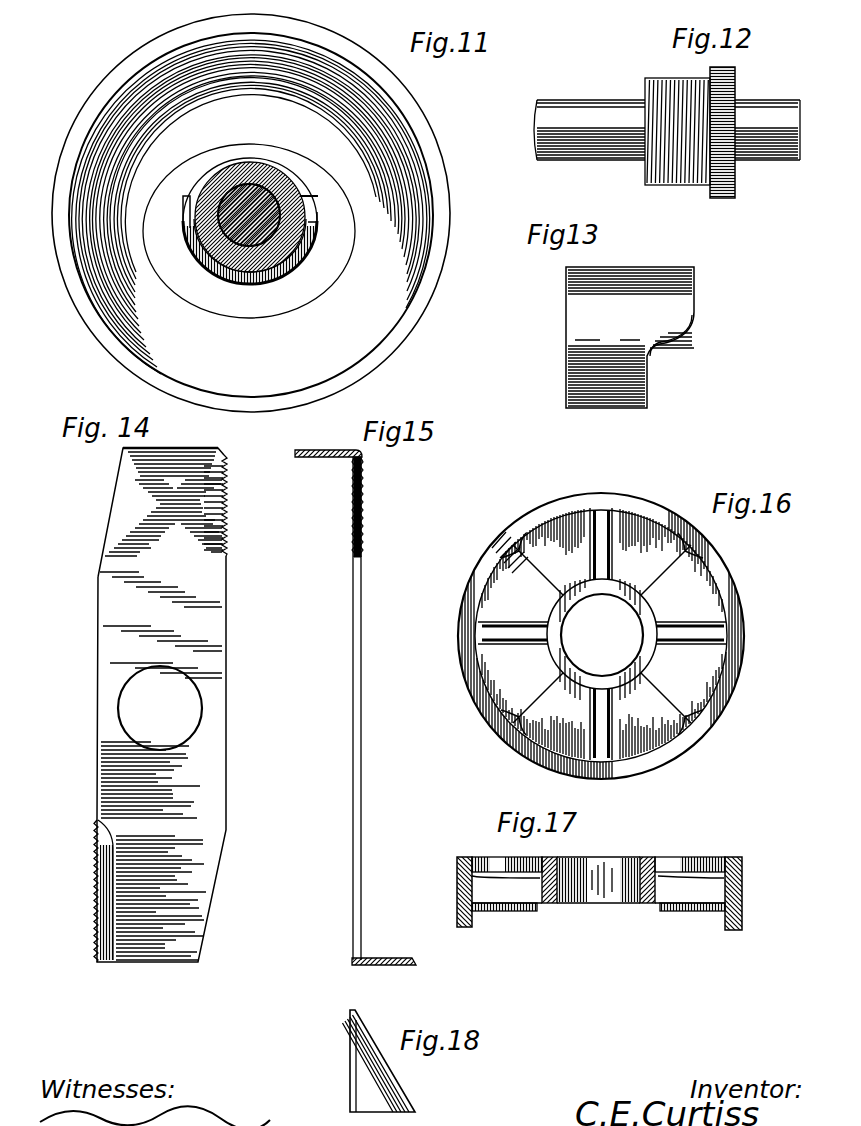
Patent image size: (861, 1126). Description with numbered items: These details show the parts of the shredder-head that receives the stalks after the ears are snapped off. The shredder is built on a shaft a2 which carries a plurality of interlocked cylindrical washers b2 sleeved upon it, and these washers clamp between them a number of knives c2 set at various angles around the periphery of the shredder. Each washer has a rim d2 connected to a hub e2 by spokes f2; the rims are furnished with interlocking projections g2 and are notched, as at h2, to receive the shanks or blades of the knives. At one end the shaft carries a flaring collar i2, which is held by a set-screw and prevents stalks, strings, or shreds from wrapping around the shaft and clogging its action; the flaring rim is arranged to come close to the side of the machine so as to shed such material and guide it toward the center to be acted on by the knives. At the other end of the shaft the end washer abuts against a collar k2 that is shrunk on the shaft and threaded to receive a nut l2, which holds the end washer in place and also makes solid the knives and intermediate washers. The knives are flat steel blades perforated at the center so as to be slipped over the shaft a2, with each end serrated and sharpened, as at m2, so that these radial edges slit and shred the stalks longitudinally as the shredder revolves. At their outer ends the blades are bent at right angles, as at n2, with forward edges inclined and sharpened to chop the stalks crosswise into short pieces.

In FIG. 11, the shredder-shaft a2 is at (270, 241).
In FIG. 12, the shredder-shaft a2 is at (568, 155).
In FIG. 16, the cylindrical washer b2 is at (686, 596).
In FIG. 17, the cylindrical washer b2 is at (608, 890).
In FIG. 14, the shredder-knife c2 is at (212, 621).
In FIG. 15, the shredder-knife c2 is at (362, 581).
In FIG. 16, the rim d2 is at (712, 706).
In FIG. 17, the rim d2 is at (744, 883).
In FIG. 11, the hub e2 is at (213, 233).
In FIG. 16, the hub e2 is at (551, 637).
In FIG. 17, the hub e2 is at (656, 857).
In FIG. 16, the spoke f2 is at (508, 641).
In FIG. 17, the spoke f2 is at (703, 885).
In FIG. 17, the interlocking projection g2 is at (458, 918).
In FIG. 17, the notch h2 is at (542, 906).
In FIG. 11, the flaring collar i2 is at (251, 213).
In FIG. 12, the collar k2 is at (648, 83).
In FIG. 11, the nut l2 is at (312, 200).
In FIG. 13, the nut l2 is at (578, 333).
In FIG. 14, the serrated and sharpened edge m2 is at (227, 525).
In FIG. 15, the serrated and sharpened edge m2 is at (363, 525).
In FIG. 14, the bent end n2 is at (194, 448).
In FIG. 15, the bent end n2 is at (405, 978).
In FIG. 18, the bent end n2 is at (360, 1088).